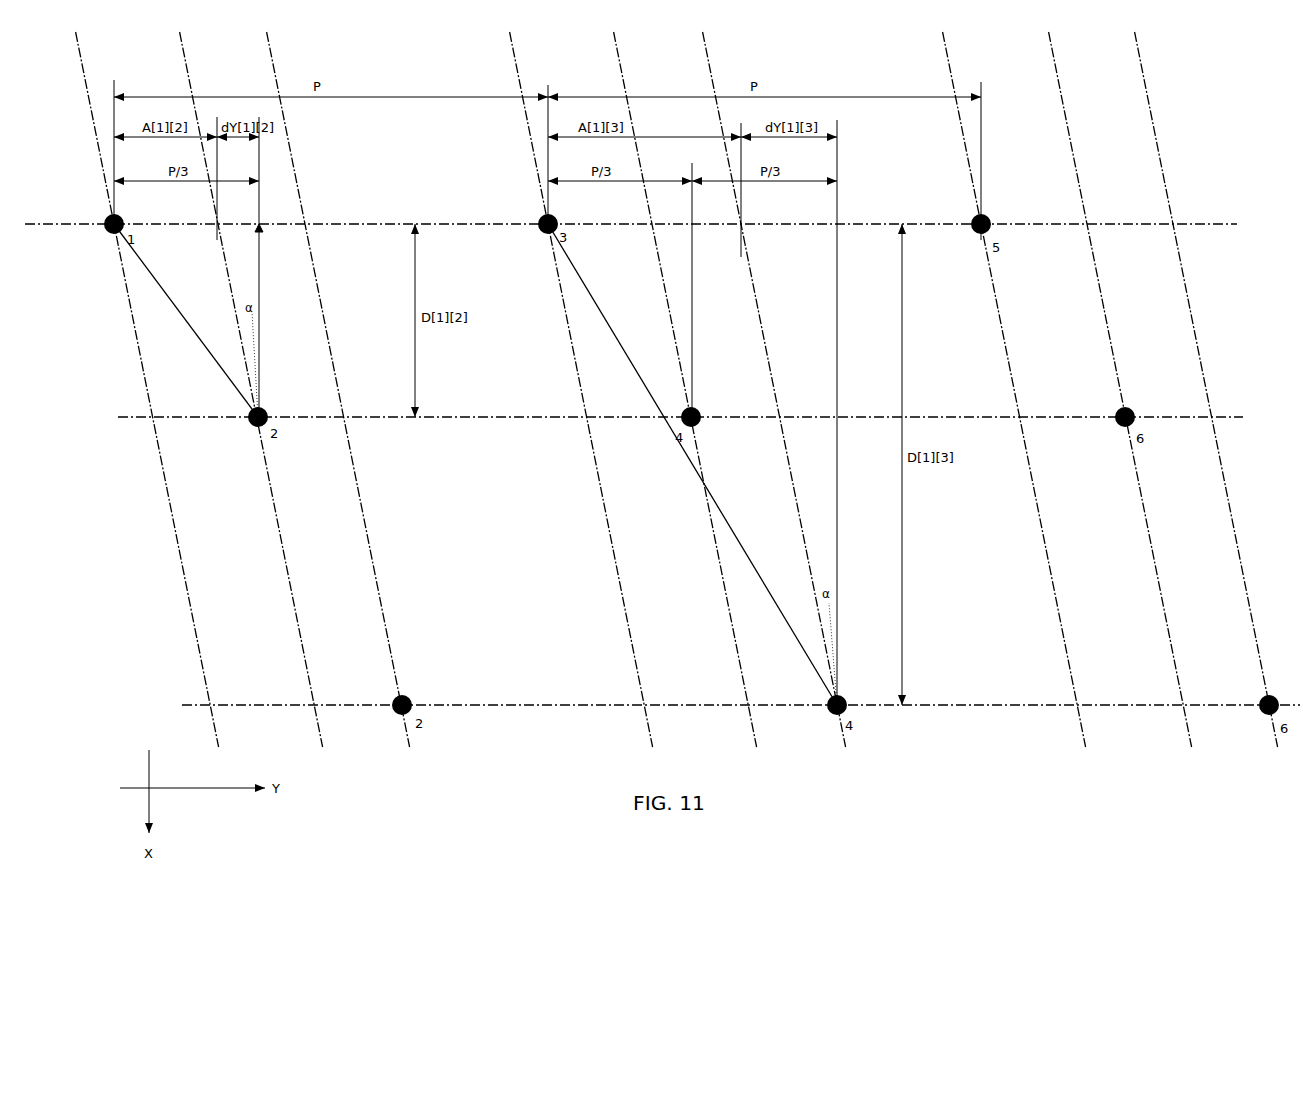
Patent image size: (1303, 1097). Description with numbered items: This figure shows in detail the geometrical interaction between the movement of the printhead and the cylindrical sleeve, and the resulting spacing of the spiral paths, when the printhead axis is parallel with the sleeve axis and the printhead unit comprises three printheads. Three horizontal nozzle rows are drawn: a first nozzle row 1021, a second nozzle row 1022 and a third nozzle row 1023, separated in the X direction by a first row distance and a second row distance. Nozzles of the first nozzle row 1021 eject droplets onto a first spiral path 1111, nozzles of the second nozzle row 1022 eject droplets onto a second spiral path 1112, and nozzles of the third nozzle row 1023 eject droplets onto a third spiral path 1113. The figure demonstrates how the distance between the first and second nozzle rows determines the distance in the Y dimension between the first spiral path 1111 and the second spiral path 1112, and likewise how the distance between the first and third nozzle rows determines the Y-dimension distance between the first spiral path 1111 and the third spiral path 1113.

The nozzle row 1021 is at (1163, 224).
The second nozzle row 1022 is at (1152, 417).
The third nozzle row 1023 is at (1198, 705).
The first spiral path 1111 is at (170, 498).
The second spiral path 1112 is at (280, 522).
The third spiral path 1113 is at (782, 433).